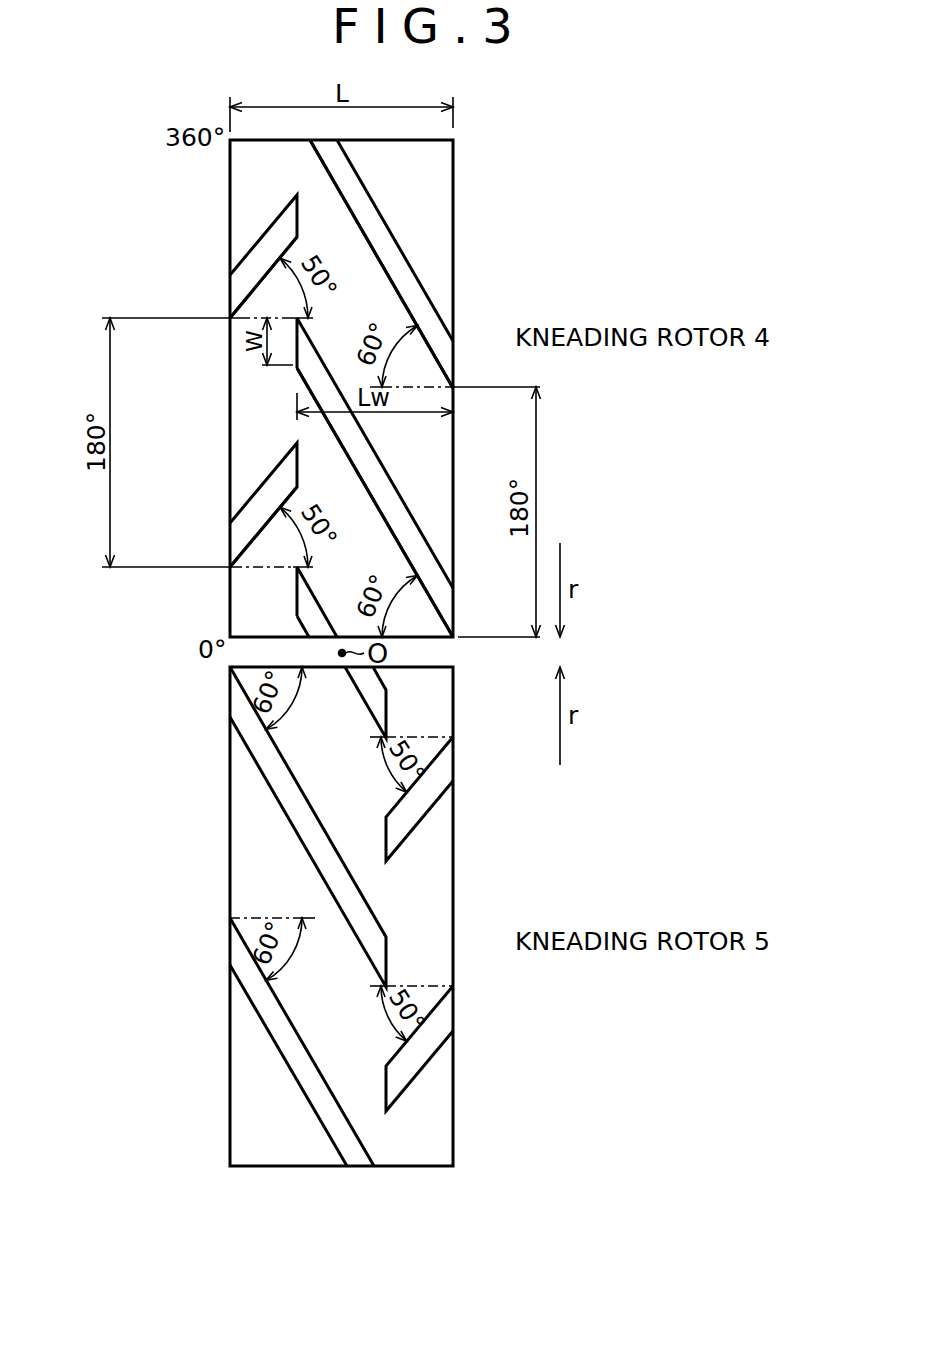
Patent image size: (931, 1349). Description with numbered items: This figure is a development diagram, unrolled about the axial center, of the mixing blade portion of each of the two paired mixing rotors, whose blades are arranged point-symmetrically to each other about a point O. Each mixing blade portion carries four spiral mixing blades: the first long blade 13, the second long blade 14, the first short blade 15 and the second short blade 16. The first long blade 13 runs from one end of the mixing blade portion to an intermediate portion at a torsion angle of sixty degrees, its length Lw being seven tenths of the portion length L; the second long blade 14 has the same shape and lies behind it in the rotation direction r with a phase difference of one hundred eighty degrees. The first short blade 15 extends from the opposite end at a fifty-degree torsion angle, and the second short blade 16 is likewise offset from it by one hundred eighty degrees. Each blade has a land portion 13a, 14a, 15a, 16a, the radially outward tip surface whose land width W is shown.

The first long blade 13 is at (412, 513).
The land portion 13a is at (378, 481).
The second long blade 14 is at (400, 246).
The land portion 14a is at (363, 205).
The first short blade 15 is at (258, 490).
The land portion 15a is at (250, 511).
The second short blade 16 is at (262, 239).
The land portion 16a is at (246, 262).